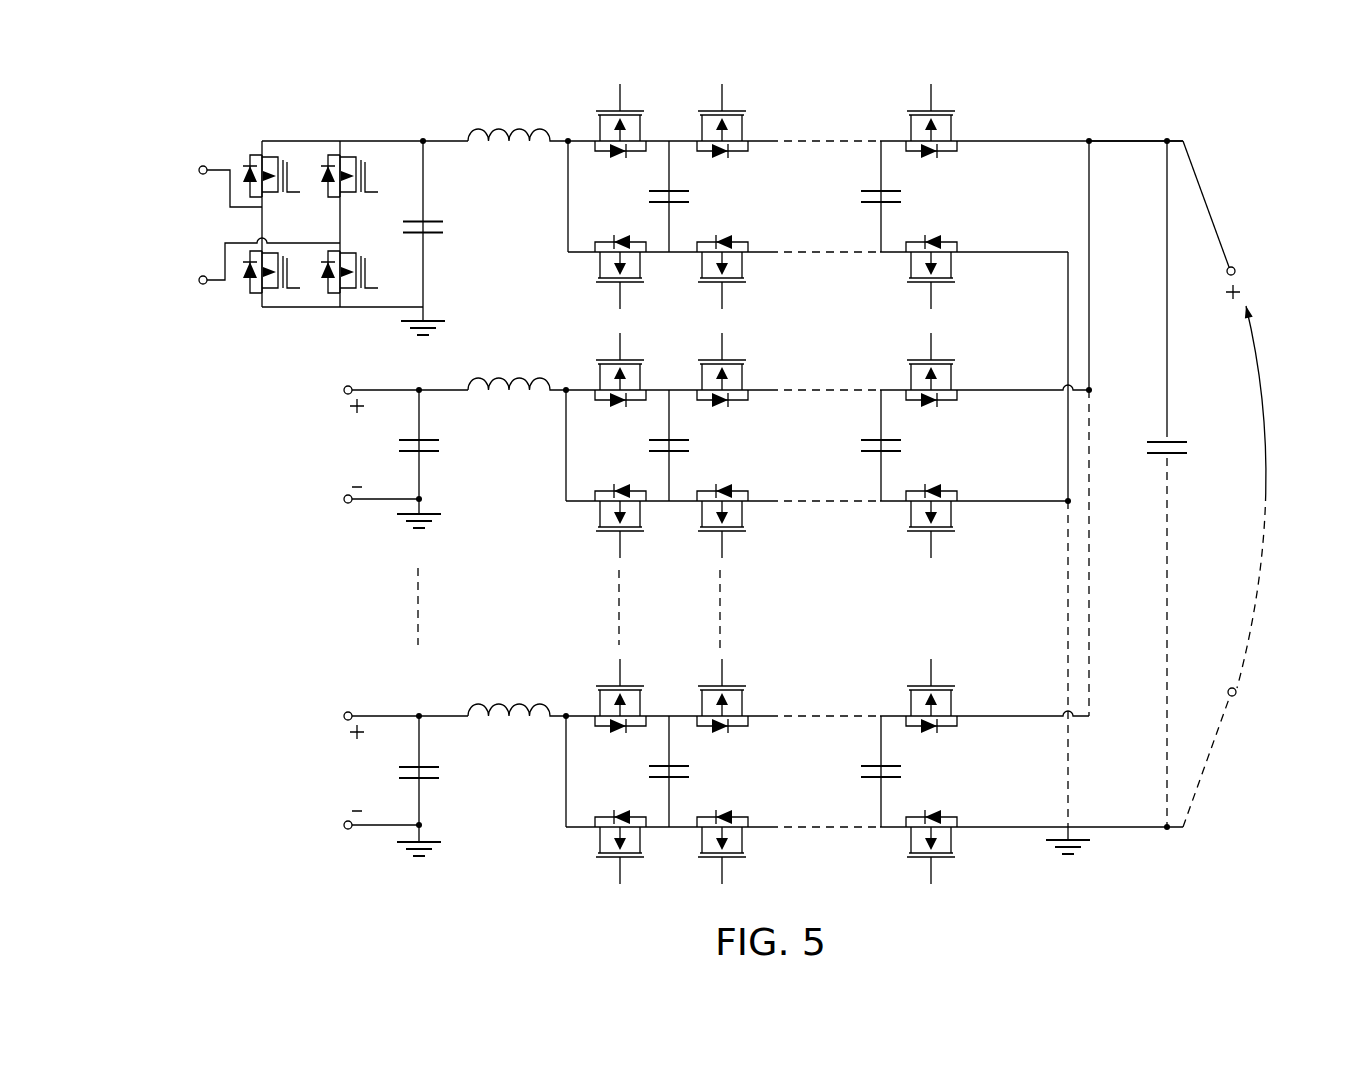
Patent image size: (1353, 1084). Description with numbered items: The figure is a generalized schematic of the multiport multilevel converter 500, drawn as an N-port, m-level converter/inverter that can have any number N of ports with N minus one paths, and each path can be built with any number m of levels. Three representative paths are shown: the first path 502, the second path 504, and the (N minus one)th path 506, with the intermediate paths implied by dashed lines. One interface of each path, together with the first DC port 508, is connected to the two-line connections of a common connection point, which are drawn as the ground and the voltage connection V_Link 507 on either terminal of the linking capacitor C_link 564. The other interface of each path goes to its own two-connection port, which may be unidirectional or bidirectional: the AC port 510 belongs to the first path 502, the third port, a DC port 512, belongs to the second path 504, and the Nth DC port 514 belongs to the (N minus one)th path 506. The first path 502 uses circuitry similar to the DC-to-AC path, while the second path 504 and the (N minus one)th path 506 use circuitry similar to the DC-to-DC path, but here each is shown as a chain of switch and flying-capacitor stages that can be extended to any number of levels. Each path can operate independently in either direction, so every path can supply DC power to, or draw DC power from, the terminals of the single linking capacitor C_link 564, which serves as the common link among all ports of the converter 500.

The multiport multilevel converter 500 is at (149, 128).
The path 1 502 is at (823, 58).
The path 2 504 is at (548, 539).
The path (N−1) 506 is at (907, 890).
The voltage connection V_Link 507 is at (1163, 112).
The DC Port 1 508 is at (1287, 462).
The AC Port 2 510 is at (153, 266).
The DC Port 3 512 is at (262, 447).
The DC port N 514 is at (267, 772).
The linking capacitor C_link 564 is at (1120, 488).